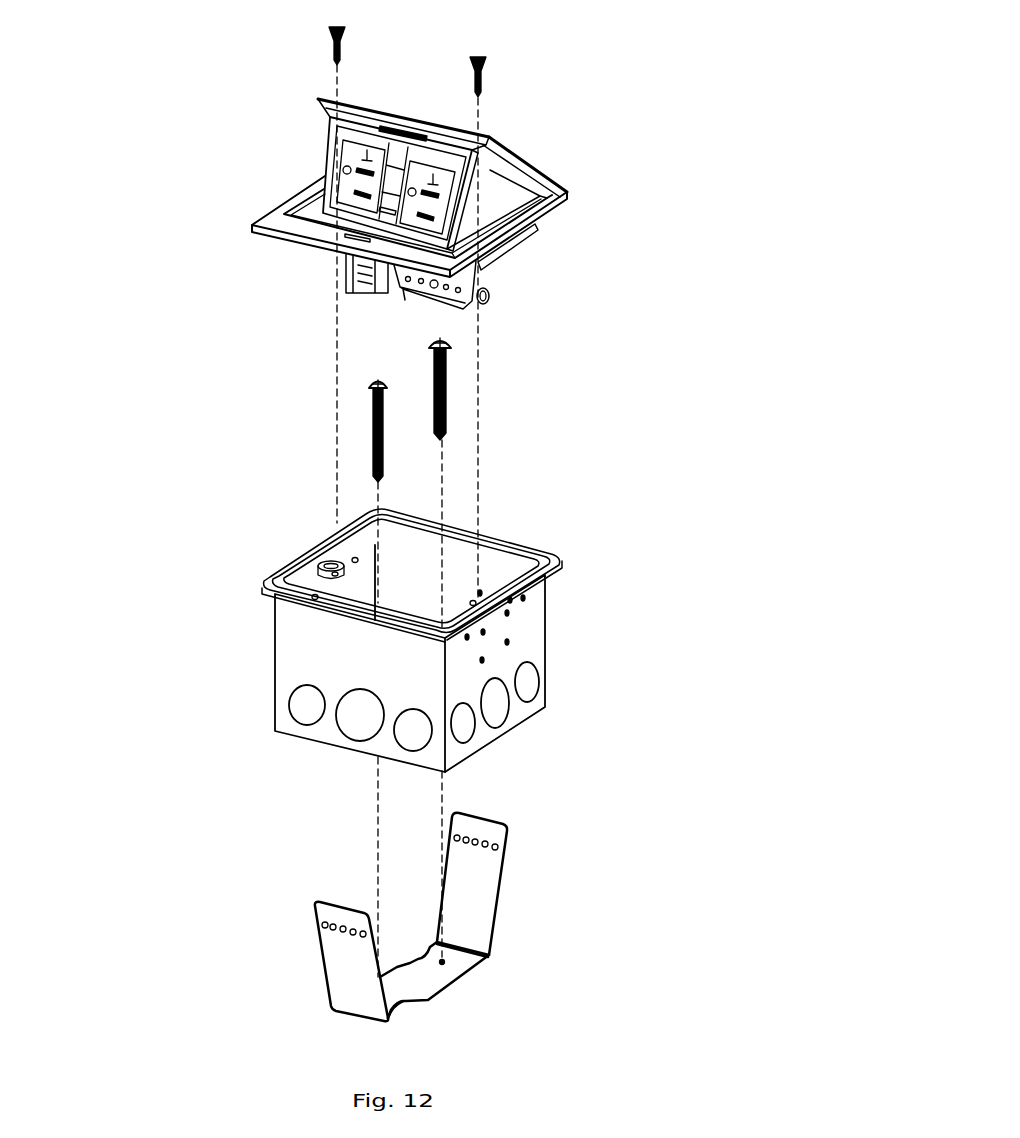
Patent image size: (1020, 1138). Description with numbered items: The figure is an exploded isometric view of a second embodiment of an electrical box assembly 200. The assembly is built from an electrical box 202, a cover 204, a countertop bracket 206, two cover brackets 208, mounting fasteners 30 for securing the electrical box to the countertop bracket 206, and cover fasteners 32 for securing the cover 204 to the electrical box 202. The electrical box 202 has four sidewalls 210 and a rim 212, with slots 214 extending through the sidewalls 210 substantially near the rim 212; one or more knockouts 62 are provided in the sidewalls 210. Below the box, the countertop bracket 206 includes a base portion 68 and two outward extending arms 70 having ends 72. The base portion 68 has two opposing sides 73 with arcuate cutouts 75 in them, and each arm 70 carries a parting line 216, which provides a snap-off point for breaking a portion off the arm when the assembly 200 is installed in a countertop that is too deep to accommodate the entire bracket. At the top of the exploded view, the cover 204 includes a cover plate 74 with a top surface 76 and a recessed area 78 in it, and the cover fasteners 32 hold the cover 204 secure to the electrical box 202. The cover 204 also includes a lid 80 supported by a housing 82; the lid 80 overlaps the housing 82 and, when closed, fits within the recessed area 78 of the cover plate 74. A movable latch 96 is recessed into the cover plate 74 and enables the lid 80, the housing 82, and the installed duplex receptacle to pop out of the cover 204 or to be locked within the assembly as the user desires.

The electrical box assembly 200 is at (97, 192).
The cover 204 is at (581, 124).
The electrical box 202 is at (600, 606).
The countertop bracket 206 is at (538, 891).
The cover fasteners 32 is at (474, 78).
The lid 80 is at (498, 146).
The cover plate 74 is at (547, 190).
The housing 82 is at (484, 192).
The top surface 76 is at (522, 228).
The recessed area 78 is at (497, 253).
The movable latch 96 is at (338, 231).
The mounting fasteners 30 is at (450, 392).
The rim 212 is at (513, 562).
The cover brackets 208 is at (333, 562).
The slots 214 is at (310, 572).
The sidewalls 210 is at (375, 662).
The knockouts 62 is at (528, 682).
The ends 72 is at (480, 813).
The arms 70 is at (473, 917).
The parting line 216 is at (335, 927).
The sides 73 is at (470, 970).
The base portion 68 is at (425, 984).
The arcuate cutouts 75 is at (405, 1009).